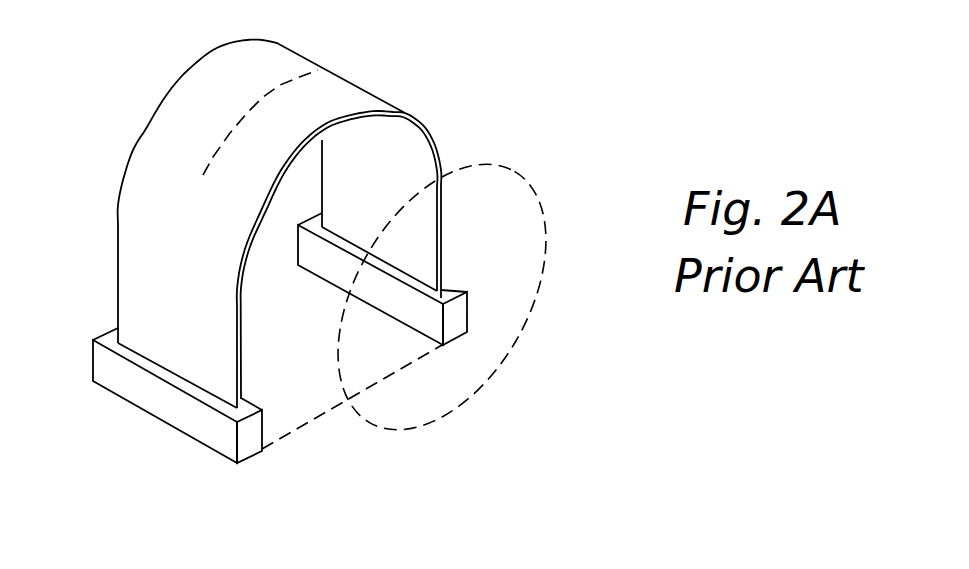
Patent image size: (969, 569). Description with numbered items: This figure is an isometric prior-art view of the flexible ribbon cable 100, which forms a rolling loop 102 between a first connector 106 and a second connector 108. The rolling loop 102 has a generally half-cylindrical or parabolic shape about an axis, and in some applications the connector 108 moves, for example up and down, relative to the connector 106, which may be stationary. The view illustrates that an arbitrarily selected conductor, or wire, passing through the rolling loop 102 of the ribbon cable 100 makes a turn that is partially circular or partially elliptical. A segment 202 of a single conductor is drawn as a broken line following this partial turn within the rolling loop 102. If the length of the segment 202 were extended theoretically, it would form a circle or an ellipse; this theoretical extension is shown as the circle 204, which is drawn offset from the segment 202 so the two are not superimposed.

The flexible ribbon cable 100 is at (160, 49).
The rolling loop 102 is at (393, 92).
The first connector 106 is at (457, 318).
The second connector 108 is at (247, 432).
The segment of a single conductor 202 is at (322, 77).
The circle 204 is at (517, 172).